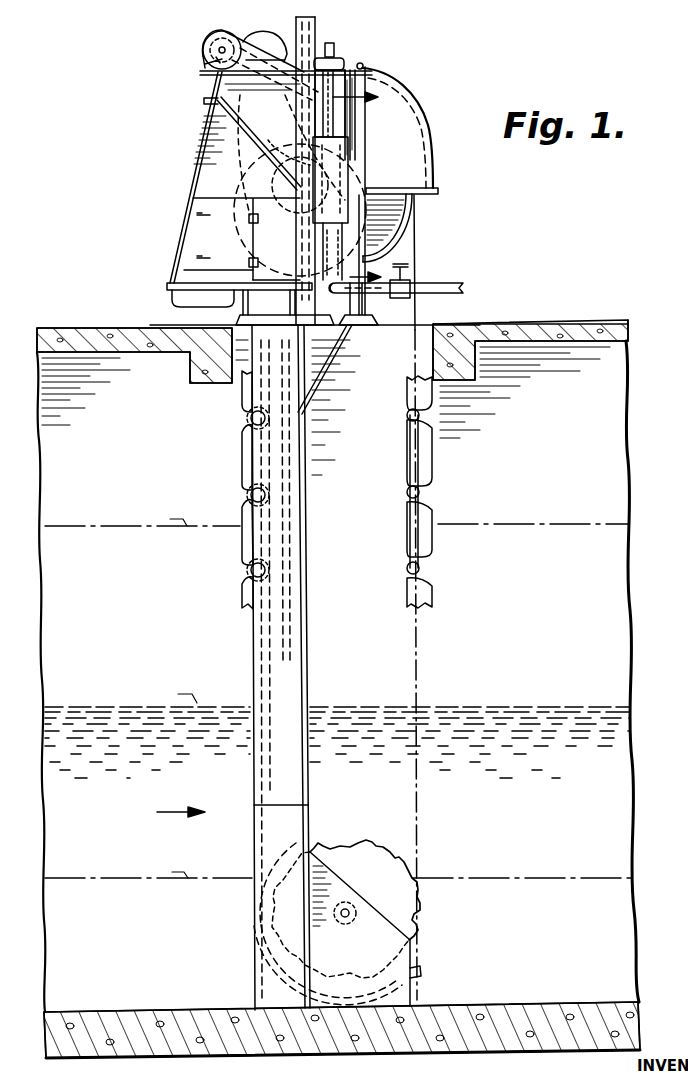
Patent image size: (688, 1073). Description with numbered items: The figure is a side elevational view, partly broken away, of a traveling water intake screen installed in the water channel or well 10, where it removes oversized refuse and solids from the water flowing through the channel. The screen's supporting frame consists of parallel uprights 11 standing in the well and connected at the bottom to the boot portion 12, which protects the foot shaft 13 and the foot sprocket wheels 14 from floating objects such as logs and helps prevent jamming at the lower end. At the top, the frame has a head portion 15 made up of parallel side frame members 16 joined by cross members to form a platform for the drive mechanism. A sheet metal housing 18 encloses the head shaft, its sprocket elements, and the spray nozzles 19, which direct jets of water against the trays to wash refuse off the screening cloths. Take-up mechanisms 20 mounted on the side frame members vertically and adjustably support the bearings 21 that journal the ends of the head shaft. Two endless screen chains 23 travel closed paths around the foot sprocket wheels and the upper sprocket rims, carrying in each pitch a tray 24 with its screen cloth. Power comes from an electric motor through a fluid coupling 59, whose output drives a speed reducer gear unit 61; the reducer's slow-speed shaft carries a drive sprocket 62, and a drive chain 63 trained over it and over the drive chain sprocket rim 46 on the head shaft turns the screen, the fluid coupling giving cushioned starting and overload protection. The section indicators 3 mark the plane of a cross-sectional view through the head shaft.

The section line 3- 3 is at (363, 189).
The water channel or well 10 is at (126, 452).
The parallel uprights 11 is at (260, 668).
The boot portion 12 is at (255, 933).
The foot shaft 13 is at (350, 922).
The foot sprocket wheels 14 is at (345, 852).
The head portion 15 is at (398, 78).
The side frame members 16 is at (352, 246).
The sheet metal housing 18 is at (192, 199).
The spray nozzles 19 is at (318, 216).
The take-up mechanisms 20 is at (336, 52).
The bearings 21 is at (410, 219).
The endless screen chains 23 is at (408, 508).
The trays 24 is at (433, 465).
The drive chain sprocket rim 46 is at (290, 140).
The fluid coupling 59 is at (293, 46).
The speed reducer gear unit 61 is at (232, 33).
The drive sprocket 62 is at (210, 58).
The drive chain 63 is at (274, 92).